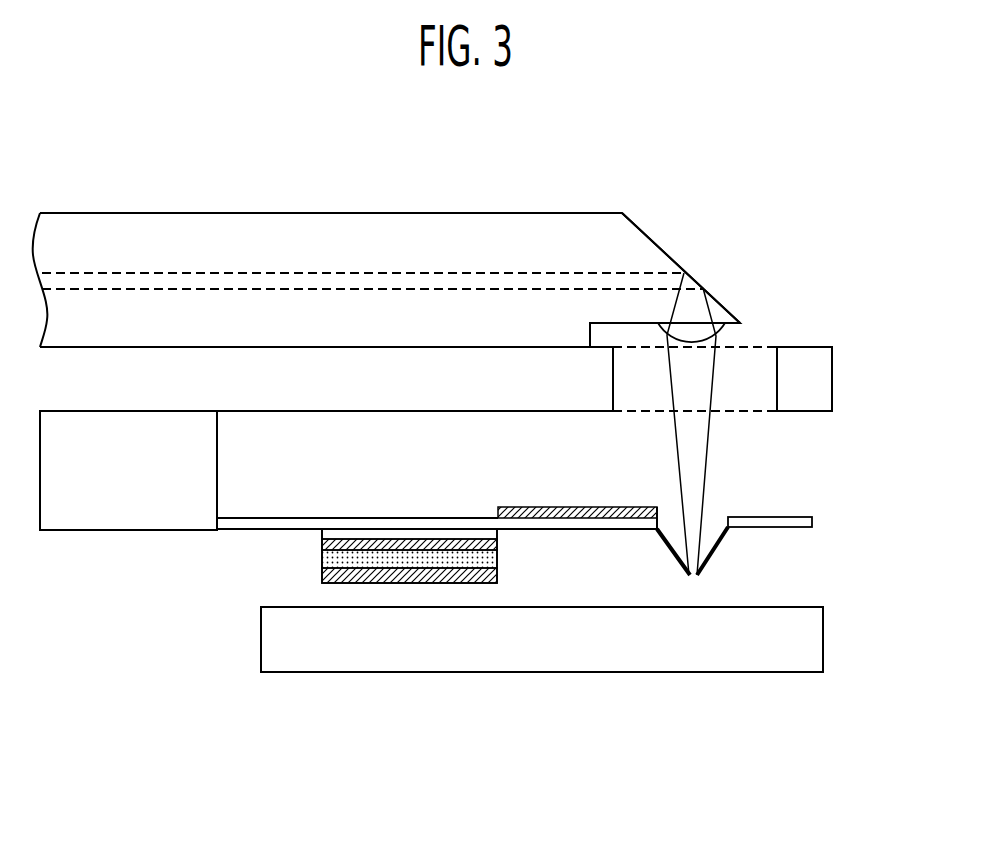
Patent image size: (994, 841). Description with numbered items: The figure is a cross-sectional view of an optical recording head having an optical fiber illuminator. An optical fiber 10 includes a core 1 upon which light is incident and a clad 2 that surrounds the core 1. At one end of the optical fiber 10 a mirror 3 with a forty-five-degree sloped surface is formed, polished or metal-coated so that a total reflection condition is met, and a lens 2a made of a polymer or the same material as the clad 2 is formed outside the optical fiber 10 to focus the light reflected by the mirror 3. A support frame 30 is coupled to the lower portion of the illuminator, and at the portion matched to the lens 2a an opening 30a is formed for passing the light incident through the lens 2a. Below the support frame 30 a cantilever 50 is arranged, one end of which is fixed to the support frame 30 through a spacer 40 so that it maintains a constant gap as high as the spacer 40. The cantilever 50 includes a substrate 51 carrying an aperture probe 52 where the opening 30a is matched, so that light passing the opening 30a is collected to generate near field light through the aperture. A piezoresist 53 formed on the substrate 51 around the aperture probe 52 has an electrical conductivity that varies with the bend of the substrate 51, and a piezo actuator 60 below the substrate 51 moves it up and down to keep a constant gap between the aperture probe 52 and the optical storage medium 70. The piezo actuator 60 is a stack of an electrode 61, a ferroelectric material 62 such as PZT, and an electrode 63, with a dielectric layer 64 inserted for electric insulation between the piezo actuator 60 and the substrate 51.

The optical fiber 10 is at (416, 228).
The core 1 is at (163, 281).
The clad 2 is at (227, 233).
The mirror 3 is at (657, 240).
The lens 2a is at (723, 332).
The support frame 30 is at (473, 408).
The opening 30a is at (648, 406).
The spacer 40 is at (87, 525).
The cantilever 50 is at (768, 509).
The substrate 51 is at (812, 523).
The aperture probe 52 is at (713, 548).
The piezoresist 53 is at (549, 505).
The piezo actuator 60 is at (386, 570).
The electrode 61 is at (320, 542).
The ferroelectric material 62 is at (320, 560).
The electrode 63 is at (320, 577).
The dielectric layer 64 is at (488, 533).
The optical storage medium 70 is at (333, 666).